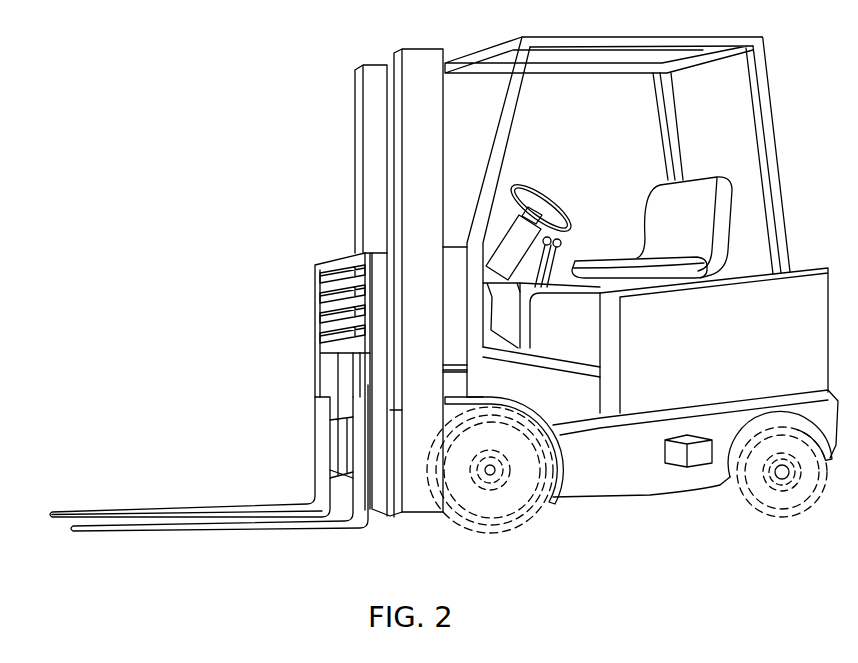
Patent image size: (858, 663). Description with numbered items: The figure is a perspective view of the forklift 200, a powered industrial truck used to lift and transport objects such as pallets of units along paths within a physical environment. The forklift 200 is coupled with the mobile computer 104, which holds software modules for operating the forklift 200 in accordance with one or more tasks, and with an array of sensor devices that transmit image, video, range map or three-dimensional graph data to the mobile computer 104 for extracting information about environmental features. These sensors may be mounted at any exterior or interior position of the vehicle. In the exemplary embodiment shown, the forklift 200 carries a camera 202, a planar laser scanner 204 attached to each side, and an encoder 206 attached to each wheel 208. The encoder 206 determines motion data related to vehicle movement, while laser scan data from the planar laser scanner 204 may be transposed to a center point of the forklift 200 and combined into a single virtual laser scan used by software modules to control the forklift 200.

The forklift 200 is at (213, 104).
The mobile computer 104 is at (340, 372).
The camera 202 is at (332, 408).
The planar laser scanner 204 is at (697, 460).
The encoder 206 is at (493, 477).
The wheel 208 is at (428, 488).